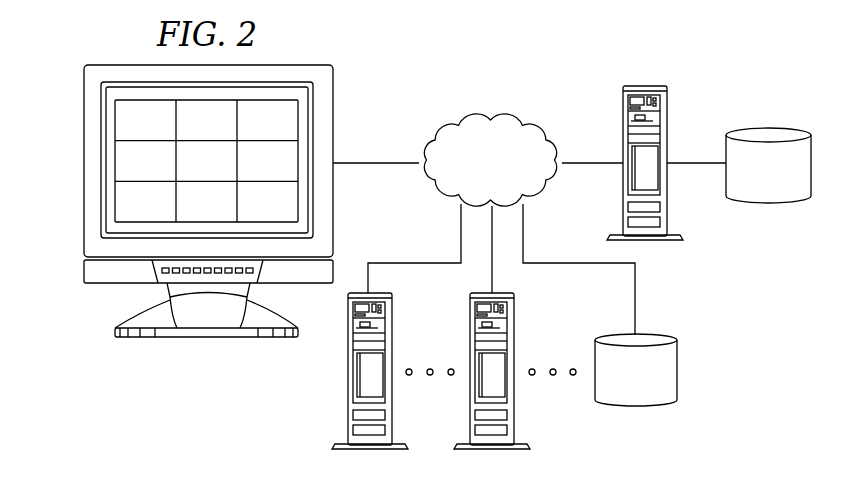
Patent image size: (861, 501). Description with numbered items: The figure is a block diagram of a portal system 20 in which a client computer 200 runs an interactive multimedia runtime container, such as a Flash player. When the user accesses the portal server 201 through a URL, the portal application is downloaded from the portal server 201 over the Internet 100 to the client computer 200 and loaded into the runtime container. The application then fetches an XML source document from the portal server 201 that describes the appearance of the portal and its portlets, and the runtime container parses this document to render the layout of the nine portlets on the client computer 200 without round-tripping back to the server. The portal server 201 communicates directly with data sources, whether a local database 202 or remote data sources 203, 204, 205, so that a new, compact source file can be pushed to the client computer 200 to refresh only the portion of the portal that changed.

The portal system 20 is at (733, 356).
The Internet 100 is at (521, 117).
The client computer 200 is at (83, 141).
The portal server 201 is at (645, 86).
The database 202 is at (751, 185).
The data source 203 is at (348, 393).
The data source 204 is at (470, 393).
The data source 205 is at (618, 387).